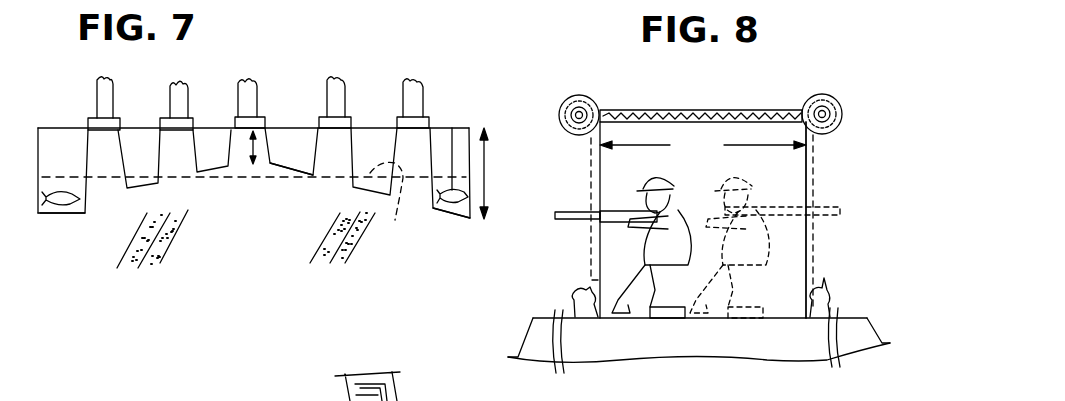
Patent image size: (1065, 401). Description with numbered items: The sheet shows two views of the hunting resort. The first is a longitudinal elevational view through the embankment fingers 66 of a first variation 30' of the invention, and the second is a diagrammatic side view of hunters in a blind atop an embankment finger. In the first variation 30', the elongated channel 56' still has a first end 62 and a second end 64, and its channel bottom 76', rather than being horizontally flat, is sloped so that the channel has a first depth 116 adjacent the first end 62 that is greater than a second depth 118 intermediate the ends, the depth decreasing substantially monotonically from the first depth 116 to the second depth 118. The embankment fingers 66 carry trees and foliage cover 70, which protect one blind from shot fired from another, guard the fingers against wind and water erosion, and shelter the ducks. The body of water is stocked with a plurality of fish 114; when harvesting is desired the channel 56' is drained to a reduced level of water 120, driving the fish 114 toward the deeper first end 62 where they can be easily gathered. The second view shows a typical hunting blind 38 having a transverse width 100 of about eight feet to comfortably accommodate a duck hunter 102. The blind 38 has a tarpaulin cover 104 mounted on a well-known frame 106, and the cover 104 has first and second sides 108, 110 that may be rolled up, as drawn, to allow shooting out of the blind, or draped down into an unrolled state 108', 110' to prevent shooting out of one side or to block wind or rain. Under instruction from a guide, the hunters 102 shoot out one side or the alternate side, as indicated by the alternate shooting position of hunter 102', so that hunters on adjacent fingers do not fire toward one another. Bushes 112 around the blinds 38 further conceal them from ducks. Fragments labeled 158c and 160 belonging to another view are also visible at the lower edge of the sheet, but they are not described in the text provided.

In FIG. 7, the first variation 30' is at (346, 31).
In FIG. 7, the elongated channel 56' is at (36, 195).
In FIG. 7, the embankment fingers 66 is at (158, 126).
In FIG. 7, the trees and foliage cover 70 is at (100, 92).
In FIG. 7, the fish 114 is at (77, 201).
In FIG. 7, the second end 64 is at (48, 212).
In FIG. 7, the second depth 118 is at (250, 150).
In FIG. 7, the channel bottom 76' is at (288, 184).
In FIG. 7, the reduced level of water 120 is at (396, 206).
In FIG. 7, the first end 62 is at (465, 214).
In FIG. 7, the first depth 116 is at (506, 173).
In FIG. 8, the hunting blind 38 is at (765, 93).
In FIG. 8, the tarpaulin cover 104 is at (663, 110).
In FIG. 8, the first side 108 is at (598, 98).
In FIG. 8, the second side 110 is at (837, 100).
In FIG. 8, the transverse width 100 is at (703, 220).
In FIG. 8, the unrolled state of first side 108' is at (558, 209).
In FIG. 8, the unrolled state of second side 110' is at (849, 219).
In FIG. 8, the frame 106 is at (800, 177).
In FIG. 8, the bushes 112 is at (580, 293).
In FIG. 8, the duck hunter 102 is at (623, 280).
In FIG. 8, the alternate shooting position of hunter 102' is at (765, 285).
In FIG. 8, the target element 158c is at (397, 390).
In FIG. 8, the target element 160 is at (505, 393).